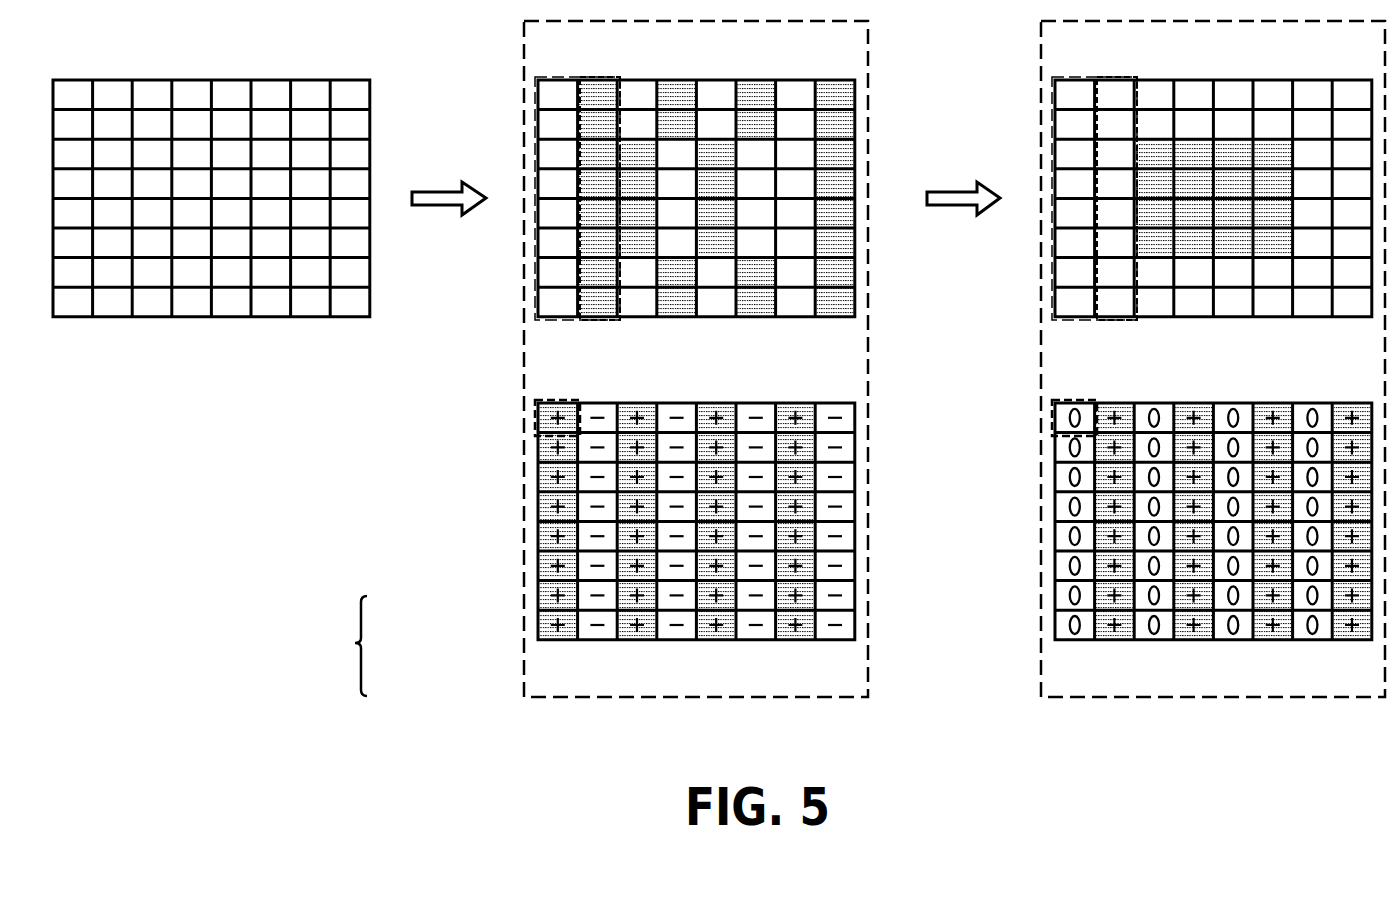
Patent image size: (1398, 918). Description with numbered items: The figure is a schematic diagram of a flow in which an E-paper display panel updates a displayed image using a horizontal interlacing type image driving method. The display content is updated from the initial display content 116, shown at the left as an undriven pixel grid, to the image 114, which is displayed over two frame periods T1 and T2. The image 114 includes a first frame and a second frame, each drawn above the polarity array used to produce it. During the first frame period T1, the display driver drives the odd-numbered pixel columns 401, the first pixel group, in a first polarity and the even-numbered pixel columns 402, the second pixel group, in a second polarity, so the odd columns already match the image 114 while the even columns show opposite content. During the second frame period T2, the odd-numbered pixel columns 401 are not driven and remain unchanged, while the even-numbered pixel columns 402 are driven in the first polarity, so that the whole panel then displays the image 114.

The initial display content 116 is at (267, 80).
The image 114 is at (379, 647).
The odd-numbered pixel columns 401 is at (536, 76).
The even-numbered pixel columns 402 is at (592, 76).
The first frame period T1 is at (753, 697).
The second frame period T2 is at (1270, 697).